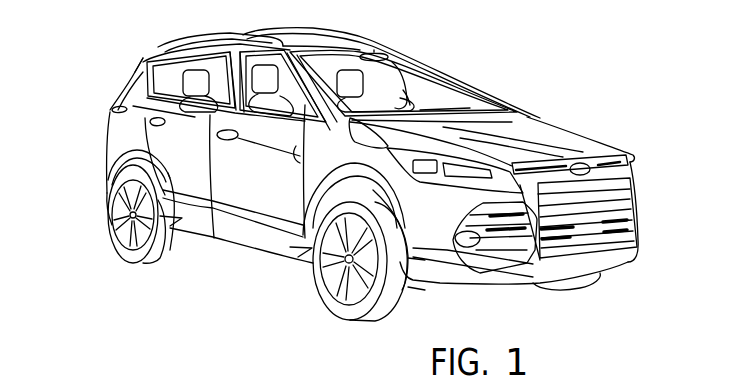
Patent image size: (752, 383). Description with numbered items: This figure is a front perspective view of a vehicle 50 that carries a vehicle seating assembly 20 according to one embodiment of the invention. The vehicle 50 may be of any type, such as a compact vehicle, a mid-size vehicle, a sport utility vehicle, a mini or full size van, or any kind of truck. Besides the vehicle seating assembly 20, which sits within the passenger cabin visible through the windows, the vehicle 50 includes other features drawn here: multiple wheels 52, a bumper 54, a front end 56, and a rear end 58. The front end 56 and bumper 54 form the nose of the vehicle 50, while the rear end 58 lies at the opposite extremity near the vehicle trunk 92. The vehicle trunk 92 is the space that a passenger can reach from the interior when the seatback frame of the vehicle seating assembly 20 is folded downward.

The vehicle seating assembly 20 is at (403, 90).
The vehicle 50 is at (373, 159).
The wheels 52 is at (327, 296).
The bumper 54 is at (637, 185).
The front end 56 is at (485, 199).
The rear end 58 is at (117, 128).
The vehicle trunk 92 is at (137, 72).